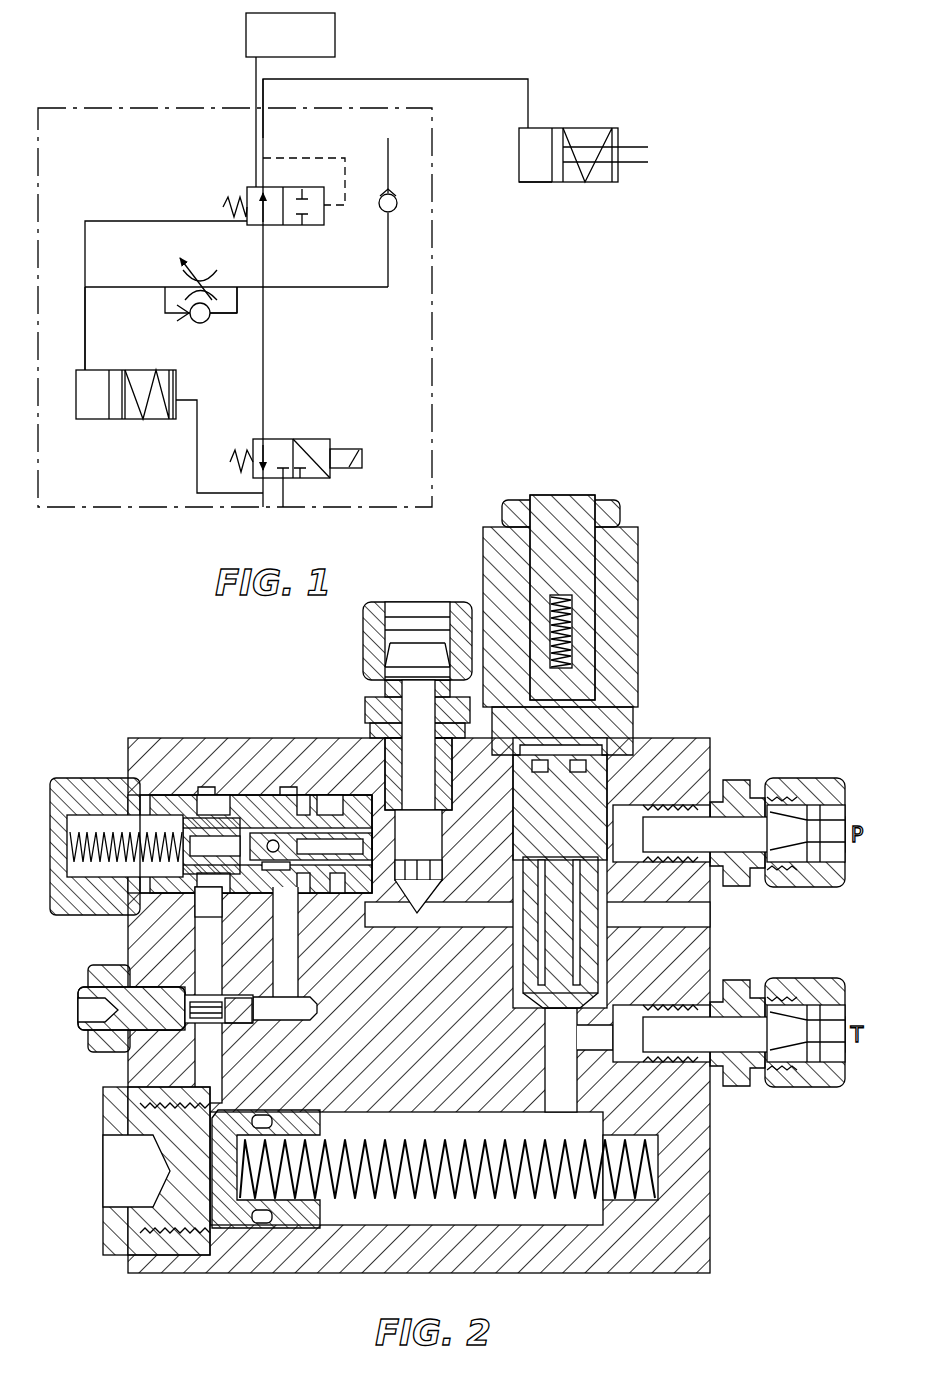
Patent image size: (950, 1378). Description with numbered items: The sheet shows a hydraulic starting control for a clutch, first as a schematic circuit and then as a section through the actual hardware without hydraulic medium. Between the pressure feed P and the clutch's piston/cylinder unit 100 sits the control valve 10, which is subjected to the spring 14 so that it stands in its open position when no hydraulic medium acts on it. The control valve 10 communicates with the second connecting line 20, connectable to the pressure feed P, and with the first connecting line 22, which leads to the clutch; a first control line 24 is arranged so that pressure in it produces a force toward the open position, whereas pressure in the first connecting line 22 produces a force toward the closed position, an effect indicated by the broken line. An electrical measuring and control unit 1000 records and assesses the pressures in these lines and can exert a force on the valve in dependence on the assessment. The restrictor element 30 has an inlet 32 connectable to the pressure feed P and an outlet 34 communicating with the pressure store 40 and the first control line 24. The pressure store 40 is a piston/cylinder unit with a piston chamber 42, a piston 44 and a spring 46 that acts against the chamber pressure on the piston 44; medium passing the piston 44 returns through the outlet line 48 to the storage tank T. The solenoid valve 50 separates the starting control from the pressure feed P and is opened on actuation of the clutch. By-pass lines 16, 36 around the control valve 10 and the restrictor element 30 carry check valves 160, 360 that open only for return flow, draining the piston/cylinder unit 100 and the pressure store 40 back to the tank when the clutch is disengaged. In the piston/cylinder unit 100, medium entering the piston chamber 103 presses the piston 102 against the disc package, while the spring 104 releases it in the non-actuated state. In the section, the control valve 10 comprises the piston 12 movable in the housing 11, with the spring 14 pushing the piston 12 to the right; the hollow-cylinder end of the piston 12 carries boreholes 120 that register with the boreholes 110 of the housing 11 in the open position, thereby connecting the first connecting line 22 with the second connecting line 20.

In FIG. 1, the electrical measuring and control unit 1000 is at (262, 46).
In FIG. 1, the control valve 10 is at (250, 187).
In FIG. 2, the control valve 10 is at (201, 796).
In FIG. 2, the housing 11 is at (327, 810).
In FIG. 2, the piston 12 is at (253, 803).
In FIG. 1, the spring 14 is at (223, 207).
In FIG. 2, the spring 14 is at (121, 810).
In FIG. 1, the by-pass line 16 is at (389, 288).
In FIG. 2, the by-pass line 16 is at (418, 905).
In FIG. 1, the second connecting line 20 is at (265, 240).
In FIG. 2, the second connecting line 20 is at (290, 877).
In FIG. 1, the first connecting line 22 is at (422, 79).
In FIG. 2, the first connecting line 22 is at (375, 863).
In FIG. 1, the first control line 24 is at (247, 223).
In FIG. 2, the first control line 24 is at (213, 887).
In FIG. 1, the restrictor element 30 is at (186, 284).
In FIG. 2, the restrictor element 30 is at (152, 1032).
In FIG. 1, the inlet 32 is at (250, 290).
In FIG. 2, the inlet 32 is at (263, 1013).
In FIG. 1, the outlet 34 is at (127, 293).
In FIG. 2, the outlet 34 is at (212, 963).
In FIG. 1, the by-pass line 36 is at (237, 313).
In FIG. 1, the pressure store 40 is at (173, 370).
In FIG. 2, the pressure store 40 is at (352, 1230).
In FIG. 1, the piston chamber 42 is at (87, 419).
In FIG. 2, the piston chamber 42 is at (223, 1232).
In FIG. 1, the piston 44 is at (113, 419).
In FIG. 2, the piston 44 is at (292, 1227).
In FIG. 1, the spring 46 is at (153, 419).
In FIG. 2, the spring 46 is at (488, 1140).
In FIG. 1, the outlet line 48 is at (199, 425).
In FIG. 2, the outlet line 48 is at (547, 1083).
In FIG. 1, the solenoid valve 50 is at (328, 478).
In FIG. 2, the solenoid valve 50 is at (622, 725).
In FIG. 1, the piston/cylinder unit 100 is at (563, 128).
In FIG. 1, the piston 102 is at (557, 128).
In FIG. 1, the piston chamber 103 is at (533, 182).
In FIG. 1, the spring 104 is at (585, 175).
In FIG. 2, the boreholes 110 is at (287, 803).
In FIG. 2, the boreholes 120 is at (270, 807).
In FIG. 1, the check valve 160 is at (397, 212).
In FIG. 2, the check valve 160 is at (443, 870).
In FIG. 1, the check valve 360 is at (207, 325).